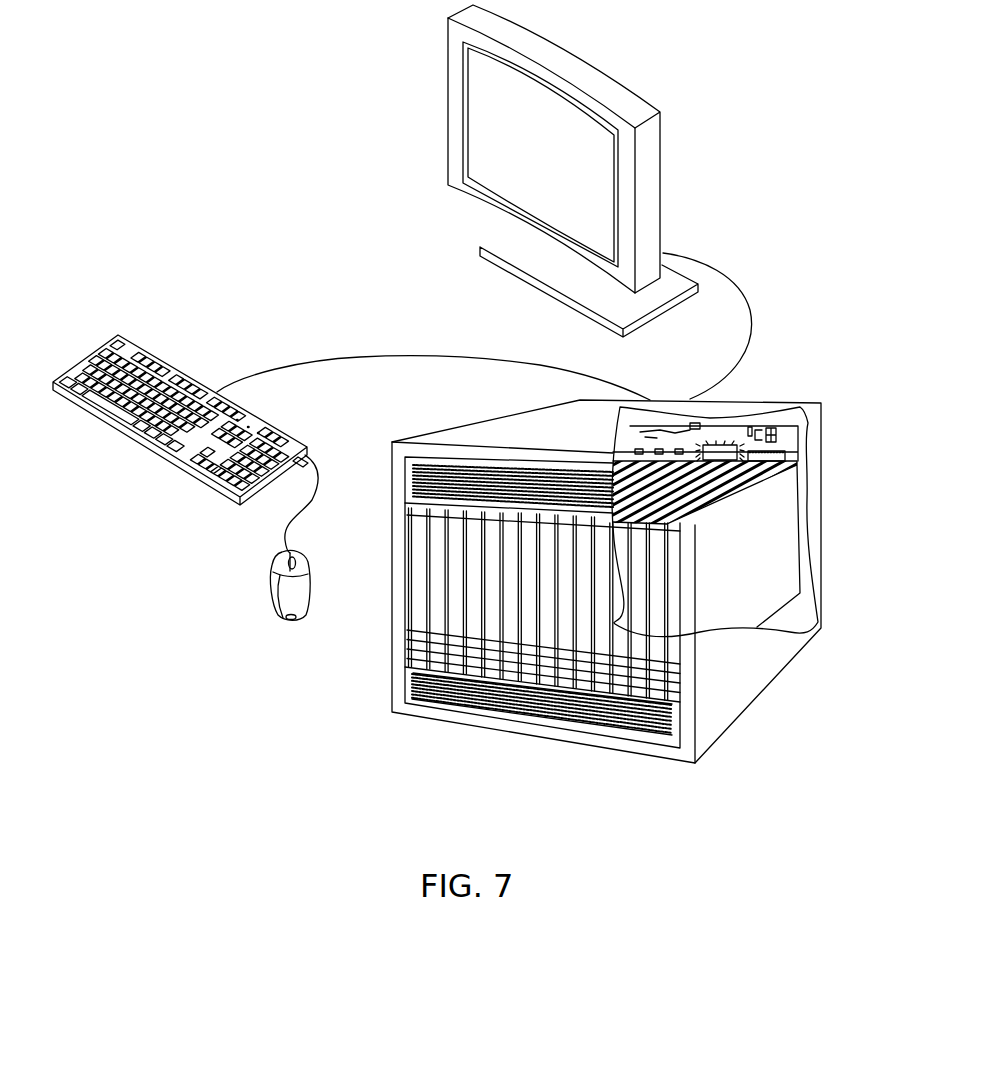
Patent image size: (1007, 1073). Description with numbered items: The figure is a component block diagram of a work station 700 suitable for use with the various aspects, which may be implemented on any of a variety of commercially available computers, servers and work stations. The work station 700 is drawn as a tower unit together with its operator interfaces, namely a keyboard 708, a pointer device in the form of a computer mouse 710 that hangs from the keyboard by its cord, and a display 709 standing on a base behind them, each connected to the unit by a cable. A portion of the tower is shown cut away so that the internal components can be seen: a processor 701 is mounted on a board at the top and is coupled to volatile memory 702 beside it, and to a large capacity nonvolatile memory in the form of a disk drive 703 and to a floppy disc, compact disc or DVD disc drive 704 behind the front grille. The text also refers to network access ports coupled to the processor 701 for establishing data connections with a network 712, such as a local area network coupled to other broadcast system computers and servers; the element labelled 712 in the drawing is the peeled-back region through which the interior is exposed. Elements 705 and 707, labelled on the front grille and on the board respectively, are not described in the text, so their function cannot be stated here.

The work station 700 is at (470, 424).
The processor 701 is at (635, 451).
The volatile memory 702 is at (778, 458).
The disk drive 703 is at (455, 553).
The disc drive 704 is at (418, 608).
The horizontal slats 705 is at (432, 581).
The processor heat sink 707 is at (722, 452).
The keyboard 708 is at (177, 368).
The display 709 is at (663, 200).
The computer mouse 710 is at (277, 616).
The network 712 is at (765, 420).